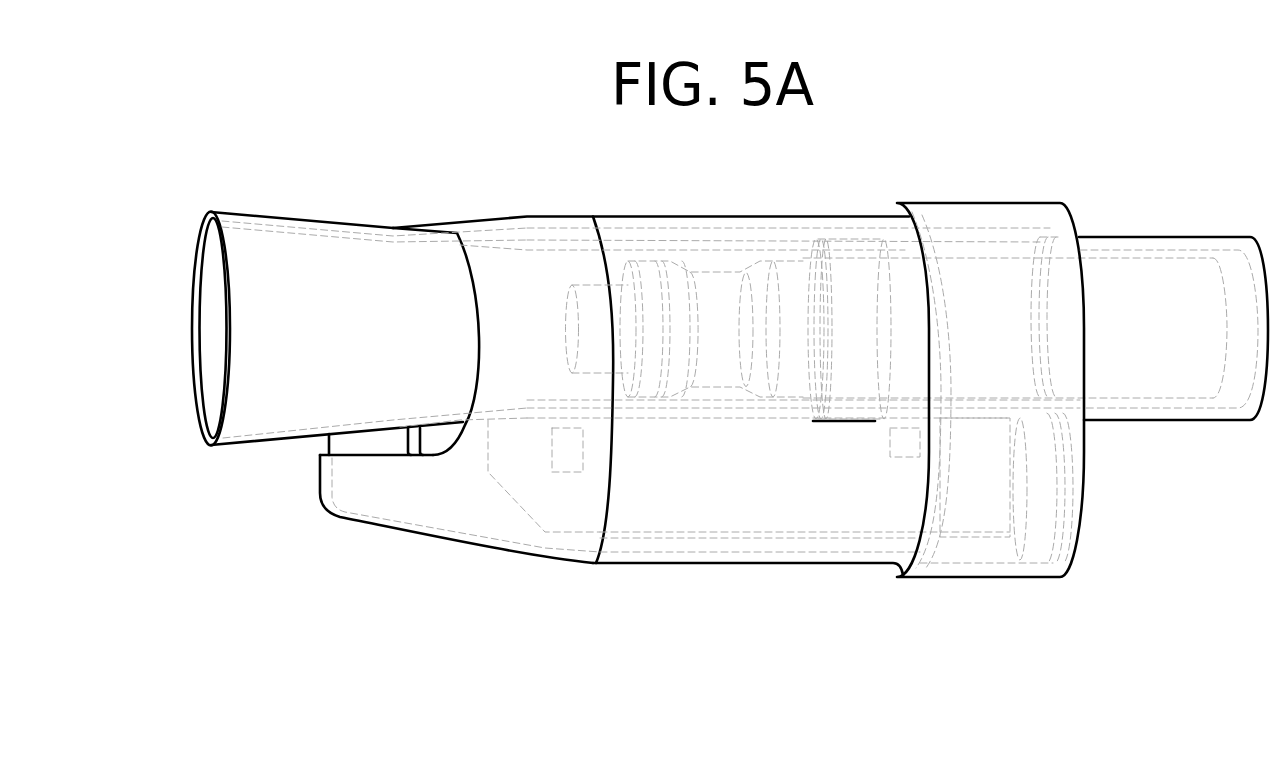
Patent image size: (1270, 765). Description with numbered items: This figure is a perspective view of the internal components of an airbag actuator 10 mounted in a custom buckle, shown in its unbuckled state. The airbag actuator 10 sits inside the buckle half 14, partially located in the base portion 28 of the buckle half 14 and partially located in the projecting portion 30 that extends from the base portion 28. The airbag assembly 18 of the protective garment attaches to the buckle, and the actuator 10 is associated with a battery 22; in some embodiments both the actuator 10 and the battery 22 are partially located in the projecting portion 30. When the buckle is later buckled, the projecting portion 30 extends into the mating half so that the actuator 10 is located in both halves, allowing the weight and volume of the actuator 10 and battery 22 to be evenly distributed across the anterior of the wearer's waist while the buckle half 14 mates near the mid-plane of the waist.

The airbag actuator 10 is at (1143, 388).
The buckle half 14 is at (322, 487).
The airbag assembly 18 is at (193, 329).
The battery 22 is at (752, 508).
The base portion 28 is at (975, 548).
The projecting portion 30 is at (1156, 237).